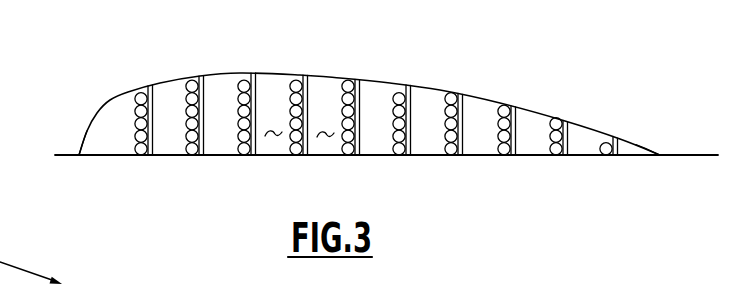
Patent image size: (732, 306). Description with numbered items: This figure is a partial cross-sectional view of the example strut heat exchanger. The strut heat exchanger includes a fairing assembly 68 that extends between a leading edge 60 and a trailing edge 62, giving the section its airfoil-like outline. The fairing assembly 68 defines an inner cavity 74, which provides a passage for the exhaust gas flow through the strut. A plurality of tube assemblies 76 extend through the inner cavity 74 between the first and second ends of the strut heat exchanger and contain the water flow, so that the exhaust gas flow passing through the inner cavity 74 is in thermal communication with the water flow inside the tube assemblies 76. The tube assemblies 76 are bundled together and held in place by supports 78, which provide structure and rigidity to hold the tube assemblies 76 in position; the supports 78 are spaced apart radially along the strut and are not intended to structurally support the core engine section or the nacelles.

The leading edge 60 is at (72, 144).
The trailing edge 62 is at (670, 144).
The fairing assembly 68 is at (117, 90).
The inner cavity 74 is at (322, 142).
The tube assemblies 76 is at (243, 79).
The supports 78 is at (468, 164).